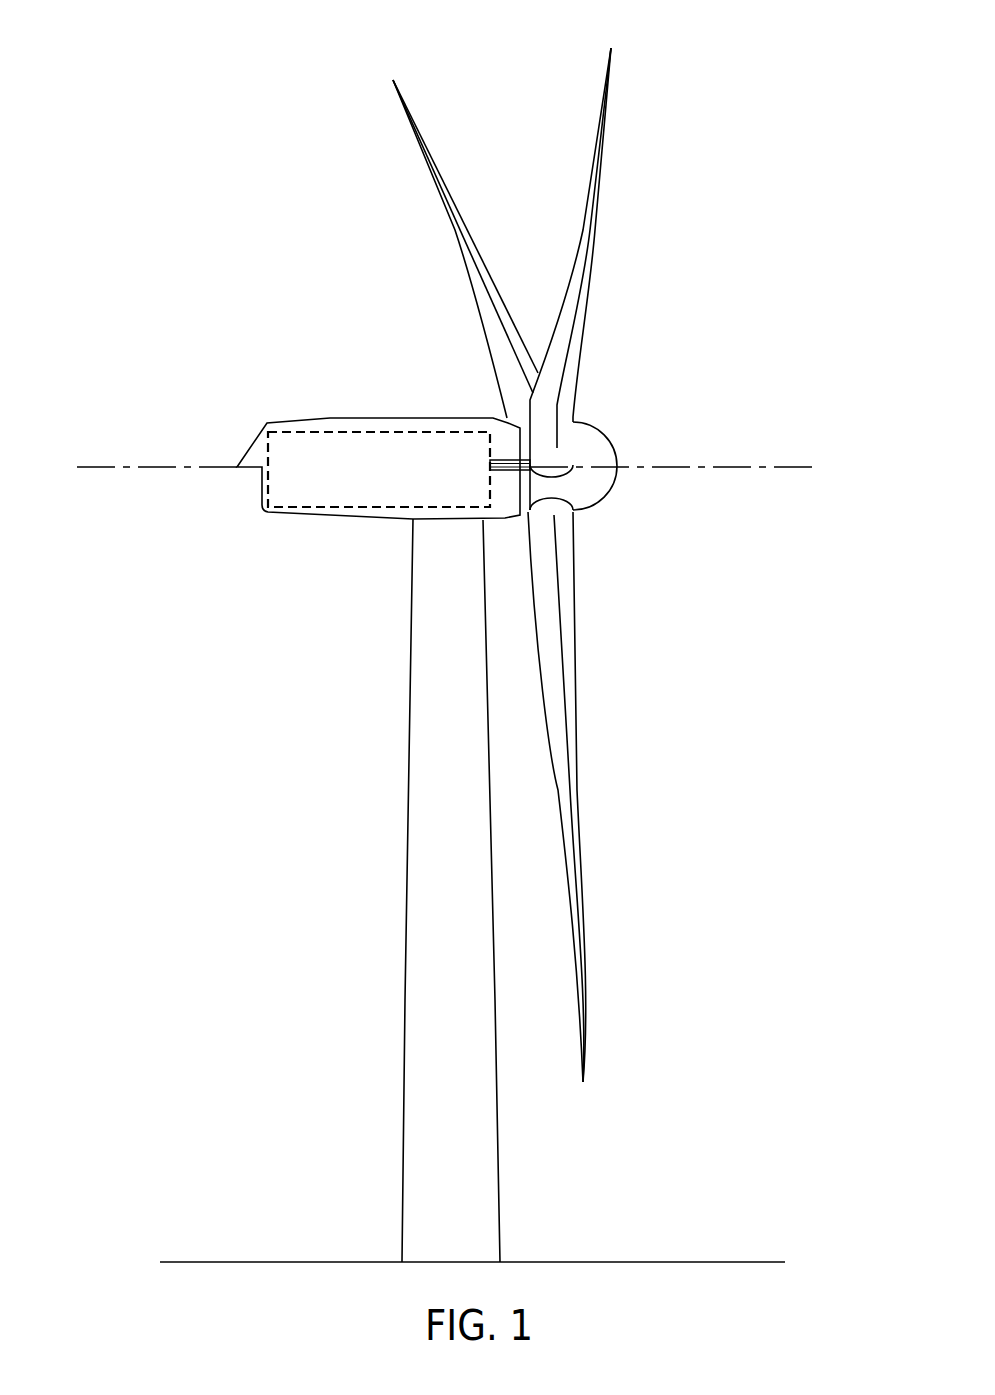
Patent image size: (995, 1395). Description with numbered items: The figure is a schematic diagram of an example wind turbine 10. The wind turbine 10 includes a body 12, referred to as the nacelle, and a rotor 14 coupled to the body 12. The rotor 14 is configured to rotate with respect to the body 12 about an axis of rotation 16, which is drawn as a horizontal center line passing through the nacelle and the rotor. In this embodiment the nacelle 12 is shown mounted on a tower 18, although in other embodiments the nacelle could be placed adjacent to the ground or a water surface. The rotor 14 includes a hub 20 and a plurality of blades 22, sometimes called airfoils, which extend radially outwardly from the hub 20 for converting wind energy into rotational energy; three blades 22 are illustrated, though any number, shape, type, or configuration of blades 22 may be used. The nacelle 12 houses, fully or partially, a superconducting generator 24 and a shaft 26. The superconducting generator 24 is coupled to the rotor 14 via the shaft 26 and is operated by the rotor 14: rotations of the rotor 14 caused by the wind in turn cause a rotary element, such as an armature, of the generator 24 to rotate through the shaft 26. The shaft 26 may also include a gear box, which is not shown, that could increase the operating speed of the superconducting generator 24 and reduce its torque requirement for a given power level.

The wind turbine 10 is at (725, 78).
The body 12 is at (317, 506).
The rotor 14 is at (600, 510).
The axis of rotation 16 is at (742, 470).
The tower 18 is at (402, 1122).
The hub 20 is at (616, 450).
The blades 22 is at (433, 175).
The superconducting generator 24 is at (368, 519).
The shaft 26 is at (520, 498).